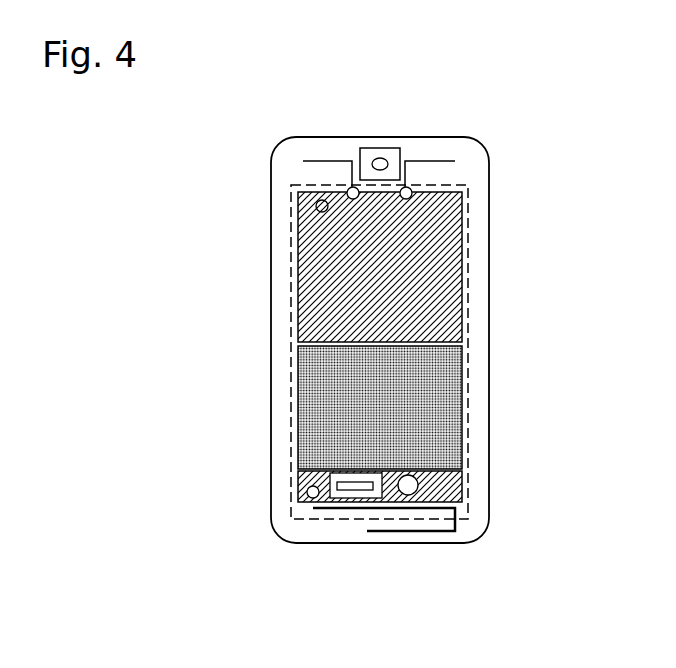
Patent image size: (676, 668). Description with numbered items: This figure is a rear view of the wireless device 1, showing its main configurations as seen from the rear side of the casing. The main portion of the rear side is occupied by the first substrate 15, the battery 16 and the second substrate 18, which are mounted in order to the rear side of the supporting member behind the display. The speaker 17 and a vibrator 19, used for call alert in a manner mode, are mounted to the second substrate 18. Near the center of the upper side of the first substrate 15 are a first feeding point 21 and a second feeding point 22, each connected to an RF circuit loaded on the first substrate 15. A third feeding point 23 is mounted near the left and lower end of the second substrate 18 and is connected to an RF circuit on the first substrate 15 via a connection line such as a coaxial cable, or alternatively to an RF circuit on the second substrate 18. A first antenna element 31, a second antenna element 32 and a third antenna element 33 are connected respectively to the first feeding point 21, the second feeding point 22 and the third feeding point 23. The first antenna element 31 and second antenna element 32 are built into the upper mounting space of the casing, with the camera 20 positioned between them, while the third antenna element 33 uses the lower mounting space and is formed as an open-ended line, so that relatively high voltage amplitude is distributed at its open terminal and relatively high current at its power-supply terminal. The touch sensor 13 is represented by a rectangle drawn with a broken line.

The wireless device 1 is at (390, 47).
The touch sensor 13 is at (470, 220).
The first substrate 15 is at (467, 266).
The battery 16 is at (460, 406).
The speaker 17 is at (362, 462).
The second substrate 18 is at (463, 481).
The vibrator 19 is at (418, 481).
The camera 20 is at (383, 148).
The first feeding point 21 is at (411, 190).
The second feeding point 22 is at (316, 214).
The third feeding point 23 is at (300, 508).
The first antenna element 31 is at (434, 161).
The second antenna element 32 is at (322, 161).
The third antenna element 33 is at (380, 532).